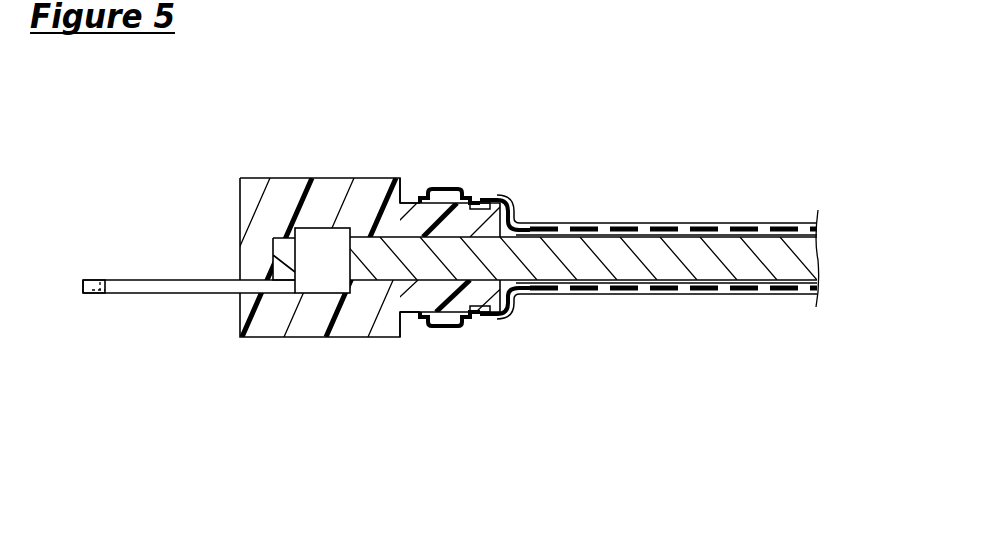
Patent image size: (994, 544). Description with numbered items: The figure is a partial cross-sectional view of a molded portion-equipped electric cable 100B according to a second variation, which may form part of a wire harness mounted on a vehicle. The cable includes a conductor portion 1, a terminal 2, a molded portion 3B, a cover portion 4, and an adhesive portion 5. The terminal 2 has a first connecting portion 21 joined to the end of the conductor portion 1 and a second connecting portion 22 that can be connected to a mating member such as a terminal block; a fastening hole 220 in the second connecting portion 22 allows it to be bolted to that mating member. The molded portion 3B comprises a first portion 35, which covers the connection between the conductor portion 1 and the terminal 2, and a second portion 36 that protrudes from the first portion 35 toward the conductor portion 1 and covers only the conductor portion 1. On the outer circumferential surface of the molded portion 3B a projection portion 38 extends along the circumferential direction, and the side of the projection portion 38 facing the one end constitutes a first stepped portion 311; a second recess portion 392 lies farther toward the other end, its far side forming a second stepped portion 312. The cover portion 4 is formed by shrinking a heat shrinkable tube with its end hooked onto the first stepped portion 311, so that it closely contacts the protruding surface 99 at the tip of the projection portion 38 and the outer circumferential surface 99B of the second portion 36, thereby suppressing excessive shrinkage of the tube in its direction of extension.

The molded portion-equipped electric cable 100B is at (765, 79).
The conductor portion 1 is at (815, 254).
The terminal 2 is at (168, 280).
The first connecting portion 21 is at (318, 284).
The second connecting portion 22 is at (93, 283).
The fastening hole 220 is at (105, 290).
The molded portion 3B is at (259, 178).
The first portion 35 is at (300, 157).
The second portion 36 is at (410, 157).
The first stepped portion 311 is at (445, 188).
The second stepped portion 312 is at (492, 202).
The cover portion 4 is at (797, 223).
The adhesive portion 5 is at (470, 233).
The projection portion 38 is at (455, 326).
The second recess portion 392 is at (483, 318).
The protruding surface 99 is at (448, 327).
The outer circumferential surface 99B is at (412, 316).